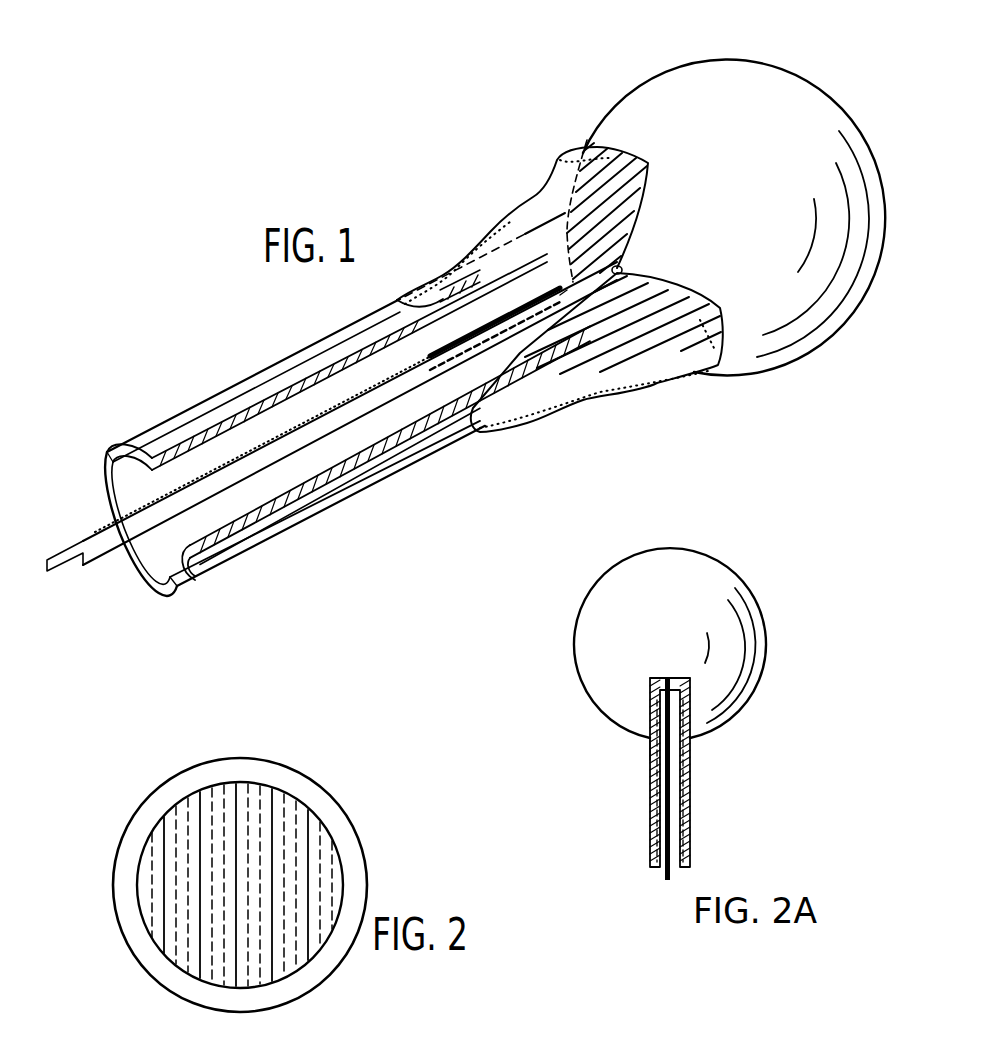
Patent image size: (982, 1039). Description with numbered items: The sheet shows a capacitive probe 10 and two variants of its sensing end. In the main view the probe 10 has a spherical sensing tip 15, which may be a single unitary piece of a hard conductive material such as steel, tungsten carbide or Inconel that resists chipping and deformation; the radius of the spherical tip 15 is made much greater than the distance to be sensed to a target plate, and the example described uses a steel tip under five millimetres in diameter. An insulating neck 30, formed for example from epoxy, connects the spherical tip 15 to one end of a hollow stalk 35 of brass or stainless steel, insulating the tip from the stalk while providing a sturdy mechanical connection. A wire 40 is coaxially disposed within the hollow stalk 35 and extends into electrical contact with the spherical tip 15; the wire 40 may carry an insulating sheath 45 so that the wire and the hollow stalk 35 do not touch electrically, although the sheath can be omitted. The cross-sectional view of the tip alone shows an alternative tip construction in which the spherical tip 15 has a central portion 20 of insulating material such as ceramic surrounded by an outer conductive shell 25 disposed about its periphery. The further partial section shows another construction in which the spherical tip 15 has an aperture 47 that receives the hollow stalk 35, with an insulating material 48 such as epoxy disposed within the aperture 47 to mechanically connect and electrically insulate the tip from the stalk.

In FIG. 1, the capacitive probe 10 is at (443, 178).
In FIG. 1, the spherical sensing tip 15 is at (763, 93).
In FIG. 2A, the spherical sensing tip 15 is at (740, 627).
In FIG. 2, the central portion 20 is at (302, 813).
In FIG. 2, the outer conductive shell 25 is at (303, 987).
In FIG. 1, the insulating neck 30 is at (613, 397).
In FIG. 1, the hollow stalk 35 is at (323, 507).
In FIG. 2A, the hollow stalk 35 is at (683, 770).
In FIG. 1, the wire 40 is at (567, 290).
In FIG. 2A, the wire 40 is at (668, 880).
In FIG. 1, the insulating sheath 45 is at (95, 550).
In FIG. 2A, the aperture 47 is at (650, 743).
In FIG. 2A, the insulating material 48 is at (650, 698).